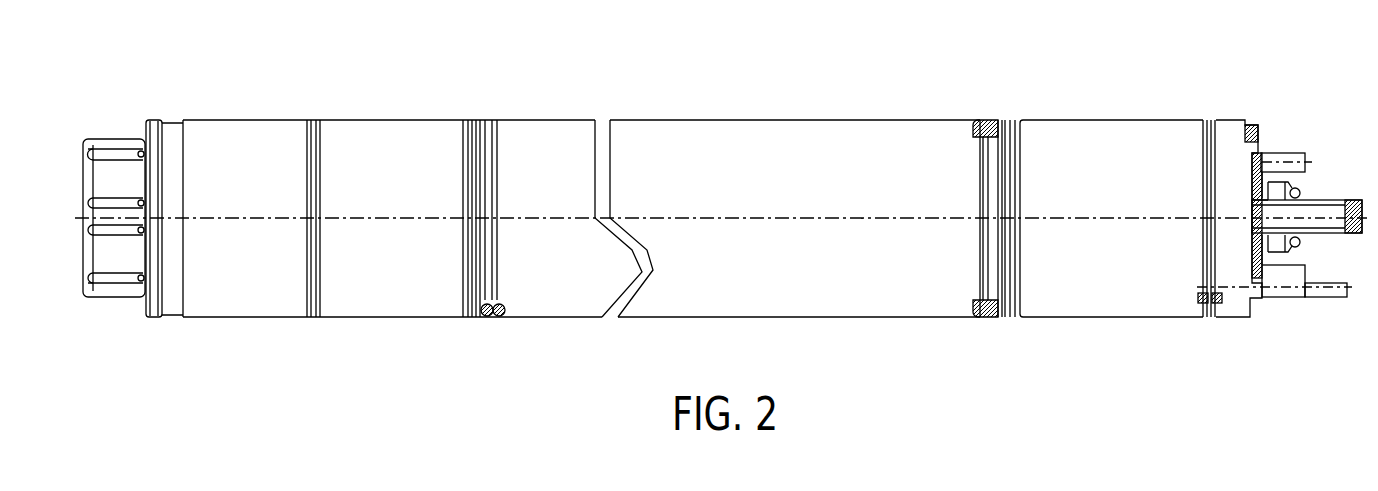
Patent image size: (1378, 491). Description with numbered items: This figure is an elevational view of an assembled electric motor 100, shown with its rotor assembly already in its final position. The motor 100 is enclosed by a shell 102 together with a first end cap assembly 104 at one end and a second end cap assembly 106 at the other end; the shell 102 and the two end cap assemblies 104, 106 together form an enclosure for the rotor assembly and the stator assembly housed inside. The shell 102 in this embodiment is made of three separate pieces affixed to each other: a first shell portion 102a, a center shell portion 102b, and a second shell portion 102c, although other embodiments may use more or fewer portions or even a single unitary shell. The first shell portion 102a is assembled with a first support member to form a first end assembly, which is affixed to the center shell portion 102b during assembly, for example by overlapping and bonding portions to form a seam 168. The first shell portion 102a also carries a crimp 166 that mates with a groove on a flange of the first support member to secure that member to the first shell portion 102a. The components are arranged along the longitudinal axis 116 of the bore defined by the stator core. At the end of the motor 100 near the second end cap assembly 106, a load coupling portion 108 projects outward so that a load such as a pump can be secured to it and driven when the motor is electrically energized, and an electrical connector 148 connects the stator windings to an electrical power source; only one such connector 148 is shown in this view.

The electric motor 100 is at (727, 90).
The shell 102 is at (883, 118).
The first shell portion 102a is at (377, 120).
The center shell portion 102b is at (640, 120).
The second shell portion 102c is at (1090, 119).
The first end cap assembly 104 is at (102, 137).
The second end cap assembly 106 is at (1228, 120).
The load coupling portion 108 is at (1348, 200).
The longitudinal axis 116 is at (862, 218).
The electrical connector 148 is at (1303, 297).
The crimp 166 is at (312, 120).
The seam 168 is at (473, 120).